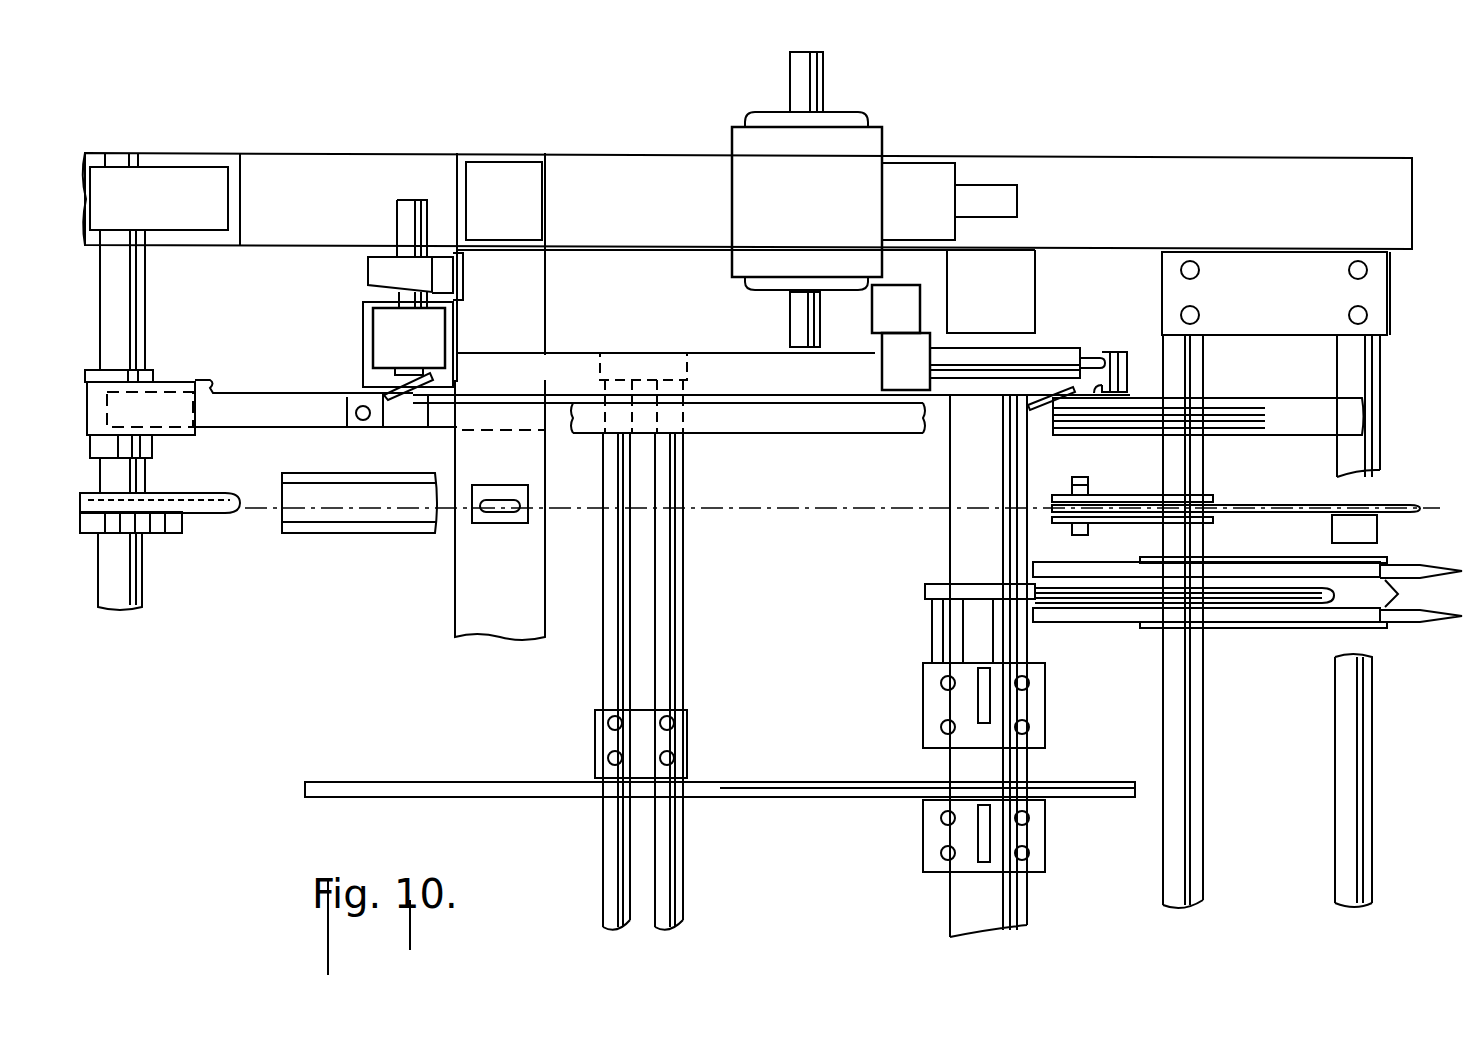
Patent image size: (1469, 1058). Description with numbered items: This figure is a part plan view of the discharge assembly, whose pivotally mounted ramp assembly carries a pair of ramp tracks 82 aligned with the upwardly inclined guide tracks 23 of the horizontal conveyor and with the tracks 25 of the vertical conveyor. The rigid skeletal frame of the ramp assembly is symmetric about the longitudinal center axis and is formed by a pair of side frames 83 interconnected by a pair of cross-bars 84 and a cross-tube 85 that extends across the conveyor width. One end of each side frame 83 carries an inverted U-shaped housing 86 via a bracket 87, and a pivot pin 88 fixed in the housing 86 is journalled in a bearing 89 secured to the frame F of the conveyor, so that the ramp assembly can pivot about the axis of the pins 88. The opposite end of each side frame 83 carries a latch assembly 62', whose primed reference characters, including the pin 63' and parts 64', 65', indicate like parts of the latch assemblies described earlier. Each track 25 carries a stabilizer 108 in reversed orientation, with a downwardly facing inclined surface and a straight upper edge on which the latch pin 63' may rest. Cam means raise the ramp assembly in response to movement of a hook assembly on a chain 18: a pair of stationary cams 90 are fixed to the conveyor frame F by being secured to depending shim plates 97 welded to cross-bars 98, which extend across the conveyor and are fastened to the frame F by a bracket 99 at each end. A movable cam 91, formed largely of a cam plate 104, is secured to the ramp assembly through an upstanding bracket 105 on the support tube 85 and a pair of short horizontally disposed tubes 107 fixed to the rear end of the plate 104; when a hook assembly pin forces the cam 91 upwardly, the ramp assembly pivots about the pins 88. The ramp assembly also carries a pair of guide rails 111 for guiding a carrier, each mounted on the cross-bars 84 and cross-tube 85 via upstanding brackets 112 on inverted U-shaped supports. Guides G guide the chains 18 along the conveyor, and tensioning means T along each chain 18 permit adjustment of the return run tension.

The chain 18 is at (495, 513).
The guide track 23 is at (233, 420).
The track 25 is at (1266, 415).
The latch assembly 62' is at (1059, 355).
The pin 63' is at (878, 362).
The cylinder 64' is at (976, 331).
The piston rod 65' is at (1104, 341).
The ramp track 82 is at (758, 420).
The side frame 83 is at (722, 348).
The cross-bar 84 is at (603, 856).
The cross-tube 85 is at (955, 538).
The inverted U-shaped housing 86 is at (382, 322).
The bracket 87 is at (380, 382).
The pivot pin 88 is at (408, 210).
The bearing 89 is at (376, 275).
The stationary cam 90 is at (1430, 566).
The movable cam 91 is at (1338, 595).
The shim plate 97 is at (1266, 562).
The cross-bar 98 is at (1190, 773).
The bracket 99 is at (1375, 300).
The cam plate 104 is at (932, 590).
The upstanding bracket 105 is at (930, 700).
The short horizontally disposed tube 107 is at (930, 620).
The stabilizer 108 is at (1129, 352).
The guide rail 111 is at (810, 782).
The upstanding bracket 112 is at (678, 738).
The frame F is at (545, 268).
The guide G is at (323, 533).
The tensioning means T is at (1136, 481).